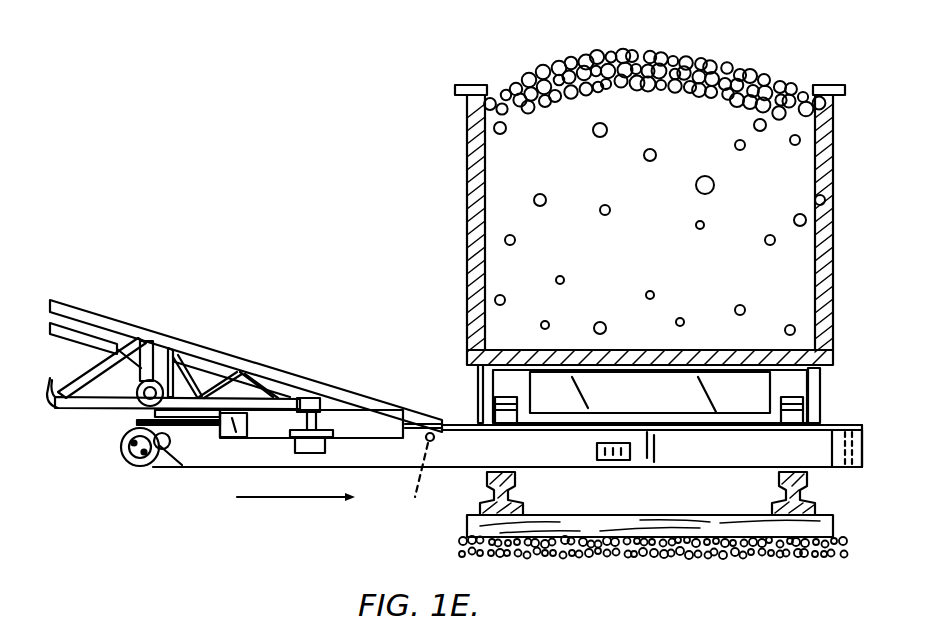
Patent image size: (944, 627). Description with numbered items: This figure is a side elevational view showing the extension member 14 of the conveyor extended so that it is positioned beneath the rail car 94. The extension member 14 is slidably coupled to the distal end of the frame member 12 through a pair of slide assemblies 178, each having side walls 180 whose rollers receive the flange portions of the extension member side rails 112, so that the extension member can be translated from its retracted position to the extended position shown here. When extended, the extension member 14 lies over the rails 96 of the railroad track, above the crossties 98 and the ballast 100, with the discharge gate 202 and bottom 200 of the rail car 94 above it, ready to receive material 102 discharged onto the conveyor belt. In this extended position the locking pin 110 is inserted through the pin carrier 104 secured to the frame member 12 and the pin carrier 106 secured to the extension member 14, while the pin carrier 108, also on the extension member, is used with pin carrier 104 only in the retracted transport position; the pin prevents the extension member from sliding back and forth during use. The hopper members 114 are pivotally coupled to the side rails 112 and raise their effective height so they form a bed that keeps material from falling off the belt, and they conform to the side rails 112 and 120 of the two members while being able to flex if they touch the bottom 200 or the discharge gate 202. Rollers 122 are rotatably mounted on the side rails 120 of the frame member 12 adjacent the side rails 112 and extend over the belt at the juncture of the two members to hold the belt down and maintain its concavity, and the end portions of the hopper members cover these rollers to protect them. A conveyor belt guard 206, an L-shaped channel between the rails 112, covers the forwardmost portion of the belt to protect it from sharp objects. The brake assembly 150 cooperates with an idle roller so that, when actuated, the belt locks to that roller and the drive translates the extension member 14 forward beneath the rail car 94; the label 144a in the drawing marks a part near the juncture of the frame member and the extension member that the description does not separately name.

The frame member 12 is at (106, 312).
The extension member 14 is at (722, 462).
The rail car 94 is at (467, 183).
The rails 96 is at (487, 498).
The crossties 98 is at (467, 528).
The ballast 100 is at (808, 560).
The material 102 is at (665, 279).
The pin carrier 104 is at (312, 404).
The pin carrier 106 is at (295, 450).
The pin carrier 108 is at (612, 442).
The locking pin 110 is at (318, 420).
The side rails 112 is at (392, 455).
The hopper members 114 is at (469, 410).
The side rails 120 is at (250, 366).
The rollers 122 is at (406, 481).
The pivot bracket 144a is at (396, 402).
The brake assembly 150 is at (117, 438).
The slide assembly 178 is at (210, 444).
The side walls 180 is at (262, 425).
The bottom 200 is at (484, 364).
The discharge gate 202 is at (807, 392).
The conveyor belt guard 206 is at (855, 470).